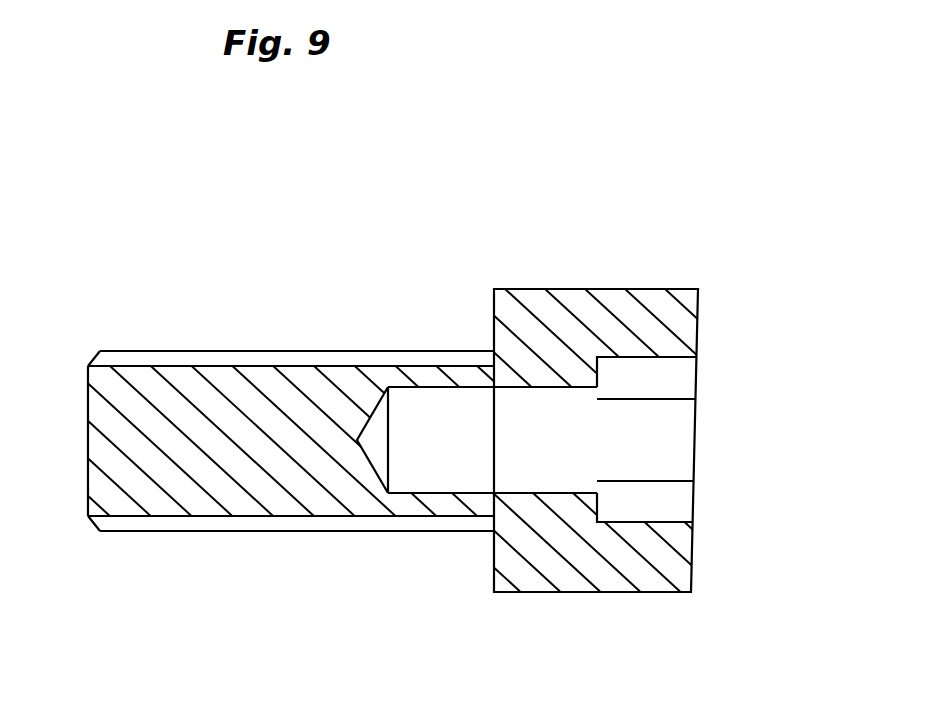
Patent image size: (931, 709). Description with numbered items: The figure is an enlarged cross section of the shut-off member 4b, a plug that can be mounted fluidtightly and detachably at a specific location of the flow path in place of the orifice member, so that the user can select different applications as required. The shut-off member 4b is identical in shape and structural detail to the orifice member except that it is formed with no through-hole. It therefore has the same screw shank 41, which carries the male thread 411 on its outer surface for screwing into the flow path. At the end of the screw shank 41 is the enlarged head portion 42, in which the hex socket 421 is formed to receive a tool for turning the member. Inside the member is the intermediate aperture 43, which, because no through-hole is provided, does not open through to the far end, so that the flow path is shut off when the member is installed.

The shut-off member 4b is at (131, 305).
The screw shank 41 is at (277, 351).
The male thread 411 is at (193, 532).
The head portion 42 is at (610, 288).
The hex socket 421 is at (633, 513).
The intermediate aperture 43 is at (517, 493).